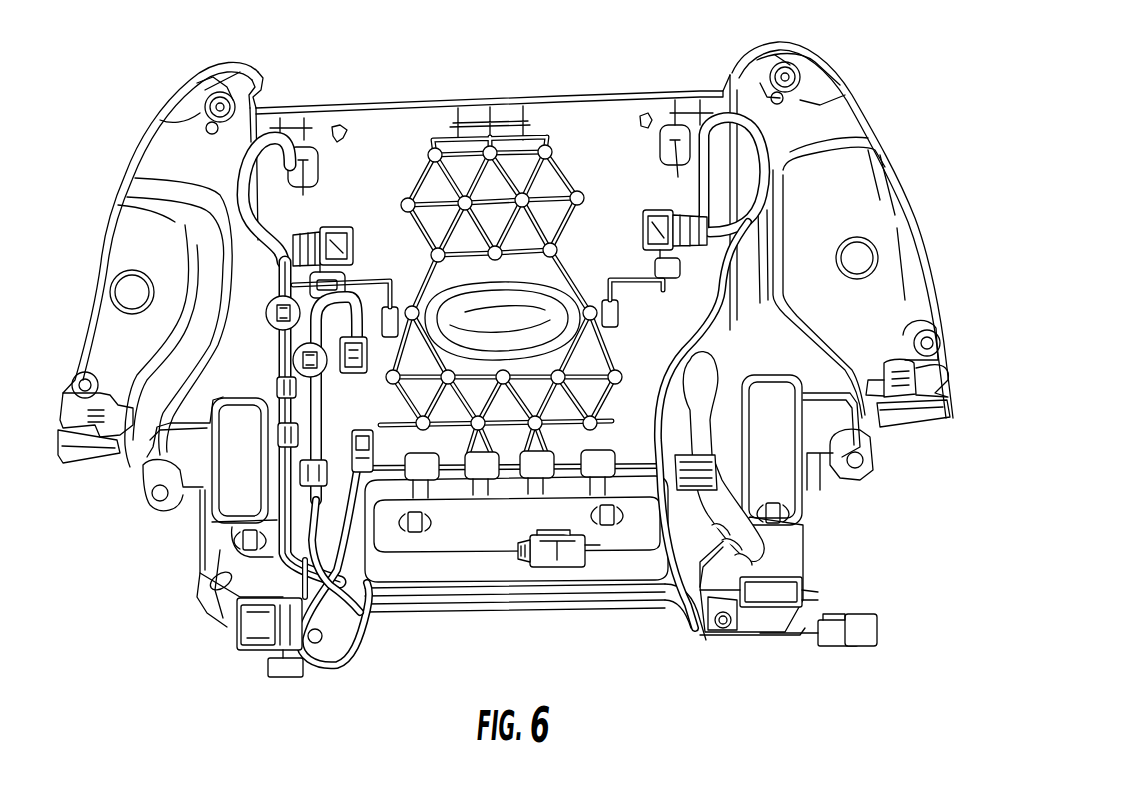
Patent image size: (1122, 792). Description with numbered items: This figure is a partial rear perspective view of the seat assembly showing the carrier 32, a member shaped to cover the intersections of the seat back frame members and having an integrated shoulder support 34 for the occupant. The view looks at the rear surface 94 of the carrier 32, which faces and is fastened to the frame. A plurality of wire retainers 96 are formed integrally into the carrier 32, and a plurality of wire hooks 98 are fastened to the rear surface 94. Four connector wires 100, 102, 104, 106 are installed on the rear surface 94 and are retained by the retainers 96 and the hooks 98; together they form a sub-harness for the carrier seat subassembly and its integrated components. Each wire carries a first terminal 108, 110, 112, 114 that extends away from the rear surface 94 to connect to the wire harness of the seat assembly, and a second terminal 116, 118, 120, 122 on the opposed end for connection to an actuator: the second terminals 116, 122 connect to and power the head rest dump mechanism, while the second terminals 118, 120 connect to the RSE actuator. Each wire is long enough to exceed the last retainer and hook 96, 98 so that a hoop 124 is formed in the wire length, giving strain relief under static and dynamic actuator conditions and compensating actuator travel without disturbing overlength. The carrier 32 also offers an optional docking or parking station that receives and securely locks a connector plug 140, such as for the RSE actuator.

The carrier 32 is at (920, 268).
The integrated shoulder support 34 is at (173, 138).
The rear surface 94 is at (847, 193).
The wire retainers 96 is at (483, 478).
The wire hooks 98 is at (266, 312).
The connector wire 100 is at (340, 613).
The connector wire 102 is at (363, 612).
The connector wire 104 is at (693, 572).
The connector wire 106 is at (768, 635).
The first terminal 108 is at (240, 627).
The first terminal 110 is at (290, 672).
The first terminal 112 is at (777, 600).
The first terminal 114 is at (863, 633).
The second terminal 116 is at (347, 227).
The second terminal 118 is at (360, 340).
The second terminal 120 is at (370, 427).
The second terminal 122 is at (673, 205).
The hoop 124 is at (262, 143).
The connector plug 140 is at (557, 552).